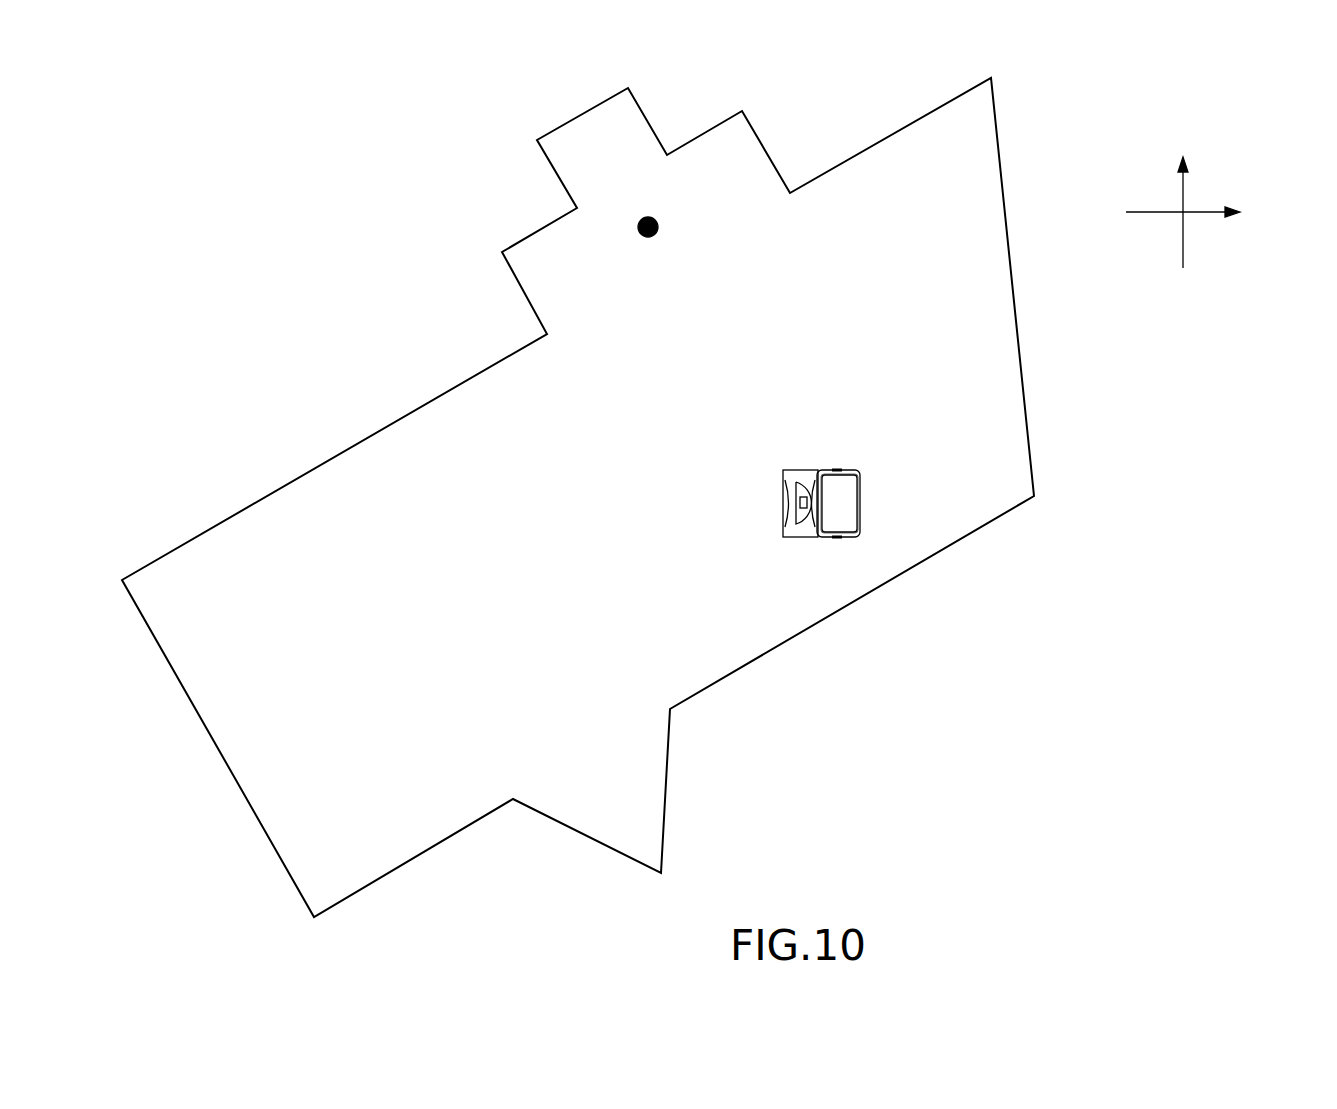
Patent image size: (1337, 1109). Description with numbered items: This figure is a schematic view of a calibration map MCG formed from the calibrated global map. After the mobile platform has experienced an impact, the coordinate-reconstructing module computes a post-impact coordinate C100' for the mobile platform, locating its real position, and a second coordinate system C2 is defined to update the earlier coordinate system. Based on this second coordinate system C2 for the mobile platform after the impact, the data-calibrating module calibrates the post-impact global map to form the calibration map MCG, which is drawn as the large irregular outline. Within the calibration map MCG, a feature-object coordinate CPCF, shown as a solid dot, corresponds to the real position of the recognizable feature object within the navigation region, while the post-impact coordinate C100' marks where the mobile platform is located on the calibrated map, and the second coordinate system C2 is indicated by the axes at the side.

The calibration map MCG is at (580, 115).
The feature-object coordinate CPCF is at (650, 238).
The post-impact coordinate C100' is at (768, 503).
The second coordinate system C2 is at (1212, 249).